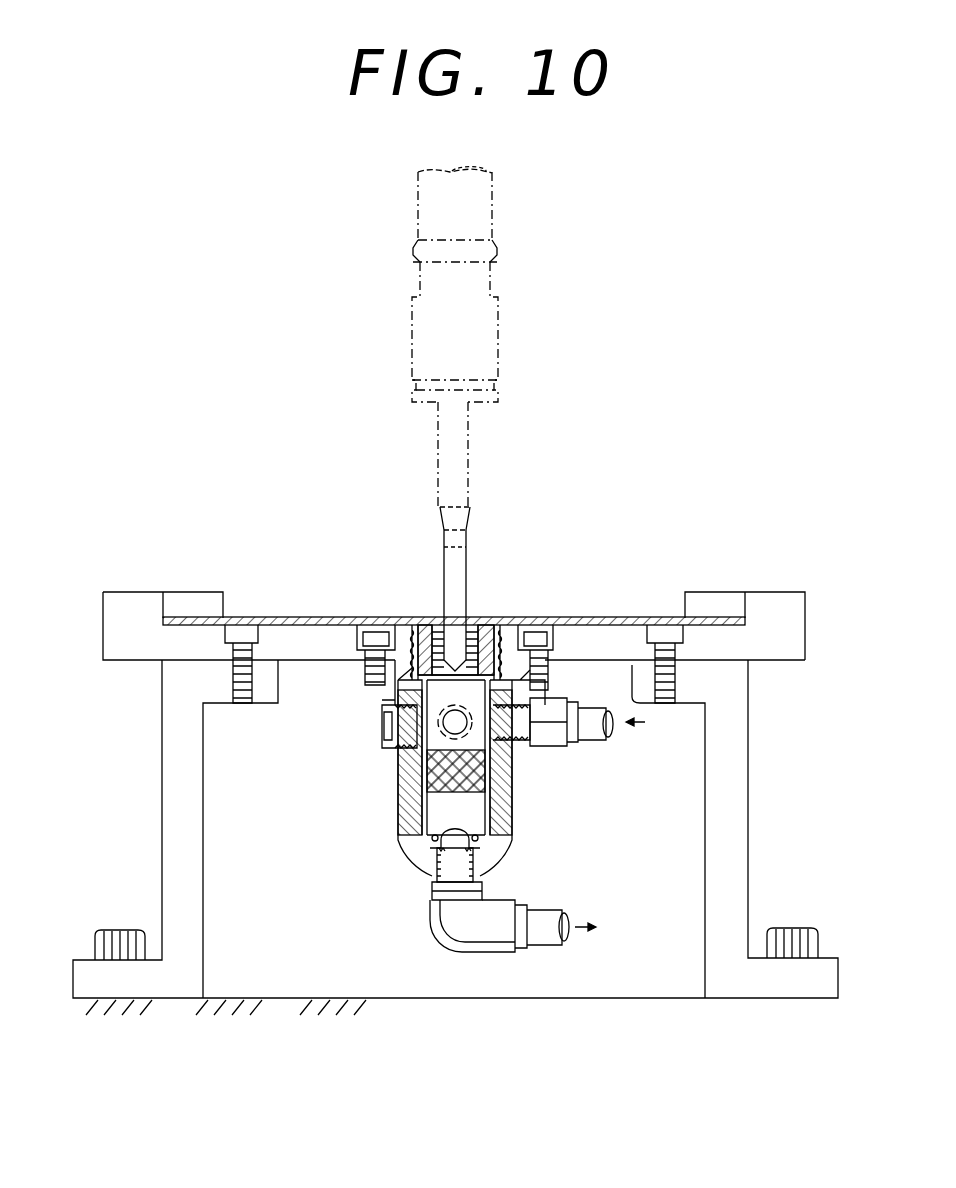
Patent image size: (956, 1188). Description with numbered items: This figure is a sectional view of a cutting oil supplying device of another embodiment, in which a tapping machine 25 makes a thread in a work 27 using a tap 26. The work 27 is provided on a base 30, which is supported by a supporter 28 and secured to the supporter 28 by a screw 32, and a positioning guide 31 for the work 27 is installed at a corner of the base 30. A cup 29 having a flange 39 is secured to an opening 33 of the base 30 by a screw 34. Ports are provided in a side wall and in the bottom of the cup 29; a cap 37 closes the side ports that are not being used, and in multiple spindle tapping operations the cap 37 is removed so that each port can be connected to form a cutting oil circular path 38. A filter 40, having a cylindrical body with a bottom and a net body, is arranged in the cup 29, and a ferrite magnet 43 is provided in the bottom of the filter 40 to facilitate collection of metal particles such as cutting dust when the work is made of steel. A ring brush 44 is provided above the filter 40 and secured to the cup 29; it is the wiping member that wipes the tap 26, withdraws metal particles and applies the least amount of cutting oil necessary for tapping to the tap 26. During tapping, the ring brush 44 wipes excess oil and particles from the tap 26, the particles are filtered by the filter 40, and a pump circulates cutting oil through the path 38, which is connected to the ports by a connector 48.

The tapping machine 25 is at (375, 275).
The tap 26 is at (470, 584).
The work 27 is at (540, 612).
The supporter 28 is at (760, 768).
The cup 29 is at (398, 815).
The base 30 is at (103, 640).
The positioning guide 31 is at (143, 592).
The screw 32 is at (252, 692).
The opening 33 is at (410, 625).
The screw 34 is at (374, 683).
The cap 37 is at (382, 736).
The cutting oil circular path 38 is at (605, 736).
The flange 39 is at (350, 633).
The filter 40 is at (420, 773).
The ferrite magnet 43 is at (405, 839).
The ring brush 44 is at (432, 620).
The connector 48 is at (540, 748).